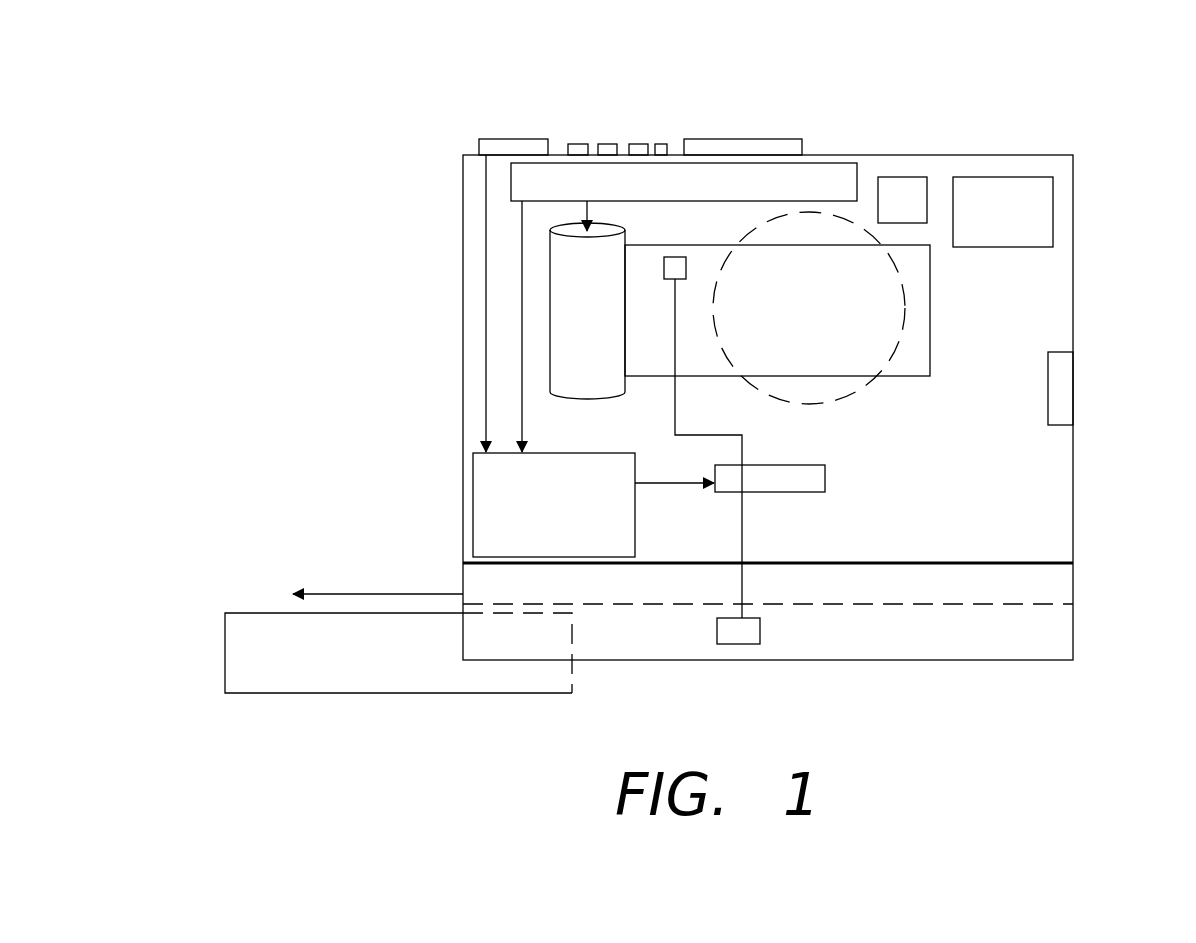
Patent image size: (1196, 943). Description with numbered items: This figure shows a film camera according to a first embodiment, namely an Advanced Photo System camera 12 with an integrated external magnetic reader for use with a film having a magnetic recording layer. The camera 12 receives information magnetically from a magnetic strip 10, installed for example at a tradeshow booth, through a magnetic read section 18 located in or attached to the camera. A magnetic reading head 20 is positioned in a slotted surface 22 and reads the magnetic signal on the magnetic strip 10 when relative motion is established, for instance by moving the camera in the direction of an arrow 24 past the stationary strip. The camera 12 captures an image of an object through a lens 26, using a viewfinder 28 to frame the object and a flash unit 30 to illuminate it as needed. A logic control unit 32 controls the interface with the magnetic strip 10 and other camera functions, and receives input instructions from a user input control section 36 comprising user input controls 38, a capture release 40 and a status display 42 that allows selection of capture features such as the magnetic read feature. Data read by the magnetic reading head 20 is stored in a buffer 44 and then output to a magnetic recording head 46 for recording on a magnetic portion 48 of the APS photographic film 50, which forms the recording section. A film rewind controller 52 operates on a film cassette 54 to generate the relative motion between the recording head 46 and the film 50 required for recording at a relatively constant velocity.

The magnetic strip 10 is at (238, 660).
The Advanced Photo System camera 12 is at (1073, 322).
The magnetic read section 18 is at (1073, 620).
The magnetic reading head 20 is at (760, 628).
The slotted surface 22 is at (622, 605).
The arrow 24 is at (363, 593).
The lens 26 is at (922, 318).
The viewfinder 28 is at (901, 177).
The flash unit 30 is at (993, 177).
The logic control unit 32 is at (472, 522).
The user input control section 36 is at (838, 83).
The user input controls 38 is at (608, 143).
The capture release 40 is at (485, 139).
The status display 42 is at (758, 139).
The buffer 44 is at (825, 482).
The magnetic recording head 46 is at (664, 268).
The magnetic portion 48 is at (705, 284).
The APS photographic film 50 is at (929, 345).
The film rewind controller 52 is at (561, 163).
The film cassette 54 is at (574, 374).